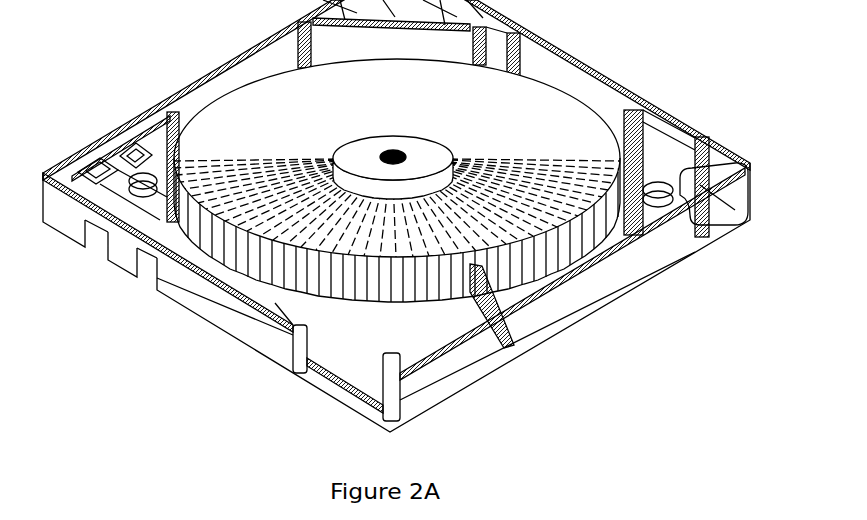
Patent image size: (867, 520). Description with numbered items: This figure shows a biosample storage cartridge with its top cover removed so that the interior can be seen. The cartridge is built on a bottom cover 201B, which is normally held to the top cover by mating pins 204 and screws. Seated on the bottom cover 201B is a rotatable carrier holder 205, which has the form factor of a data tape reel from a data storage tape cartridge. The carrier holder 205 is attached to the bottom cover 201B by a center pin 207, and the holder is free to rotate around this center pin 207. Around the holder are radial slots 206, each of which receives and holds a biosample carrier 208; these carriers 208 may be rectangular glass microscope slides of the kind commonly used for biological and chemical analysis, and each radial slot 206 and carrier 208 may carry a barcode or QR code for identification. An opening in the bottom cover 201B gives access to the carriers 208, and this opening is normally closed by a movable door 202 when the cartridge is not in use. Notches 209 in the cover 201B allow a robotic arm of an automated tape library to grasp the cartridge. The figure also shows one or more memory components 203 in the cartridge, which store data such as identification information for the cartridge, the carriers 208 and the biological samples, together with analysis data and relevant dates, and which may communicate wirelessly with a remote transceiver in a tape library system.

The bottom cover 201B is at (222, 307).
The movable door 202 is at (350, 368).
The memory component 203 is at (135, 150).
The mating pin 204 is at (650, 212).
The rotatable carrier holder 205 is at (528, 100).
The radial slot 206 is at (551, 258).
The center pin 207 is at (393, 157).
The biosample carrier 208 is at (508, 340).
The notch 209 is at (155, 280).